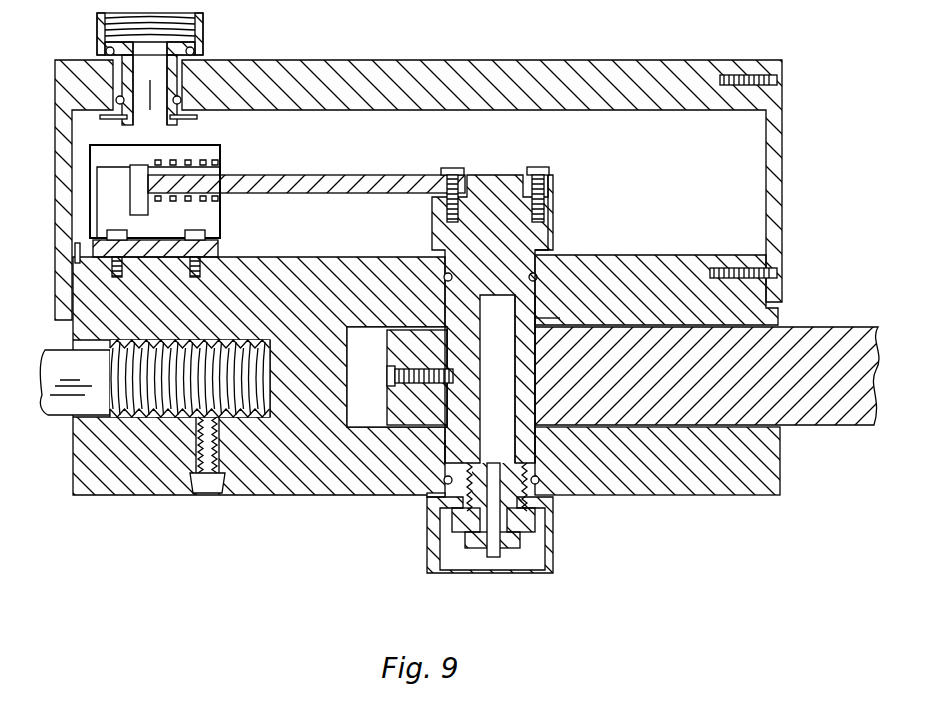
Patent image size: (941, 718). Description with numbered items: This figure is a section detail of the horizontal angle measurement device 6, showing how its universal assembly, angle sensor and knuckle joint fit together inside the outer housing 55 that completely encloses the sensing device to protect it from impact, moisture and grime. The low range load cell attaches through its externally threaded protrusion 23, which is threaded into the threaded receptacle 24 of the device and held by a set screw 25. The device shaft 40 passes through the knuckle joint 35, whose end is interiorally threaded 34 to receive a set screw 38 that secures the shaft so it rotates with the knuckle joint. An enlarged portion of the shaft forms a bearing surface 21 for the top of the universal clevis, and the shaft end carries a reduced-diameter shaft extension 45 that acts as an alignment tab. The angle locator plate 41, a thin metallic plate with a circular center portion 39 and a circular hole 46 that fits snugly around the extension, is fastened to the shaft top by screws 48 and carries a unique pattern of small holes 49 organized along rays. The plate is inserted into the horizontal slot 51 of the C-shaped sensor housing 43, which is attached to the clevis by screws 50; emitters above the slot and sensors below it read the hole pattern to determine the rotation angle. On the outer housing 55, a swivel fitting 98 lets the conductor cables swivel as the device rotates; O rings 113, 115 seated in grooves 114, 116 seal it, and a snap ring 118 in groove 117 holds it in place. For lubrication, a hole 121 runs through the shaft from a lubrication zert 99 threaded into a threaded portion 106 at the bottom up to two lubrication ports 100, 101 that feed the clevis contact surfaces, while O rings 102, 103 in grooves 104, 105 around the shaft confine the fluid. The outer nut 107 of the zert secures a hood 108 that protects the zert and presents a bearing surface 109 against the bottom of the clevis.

The horizontal angle measurement device 6 is at (130, 495).
The bearing surface 21 is at (540, 277).
The externally threaded protrusion 23 is at (60, 362).
The threaded receptacle 24 is at (212, 340).
The set screw 25 is at (225, 490).
The interior threading 34 is at (380, 360).
The knuckle joint 35 is at (556, 397).
The set screw 38 is at (420, 350).
The circular center portion 39 is at (552, 172).
The shaft 40 is at (554, 238).
The angle locator plate 41 is at (318, 176).
The housing 43 is at (205, 152).
The shaft extension 45 is at (150, 170).
The circular hole 46 is at (220, 242).
The screws 48 is at (453, 168).
The small holes 49 is at (218, 168).
The screws 50 is at (110, 234).
The horizontal slot 51 is at (216, 200).
The outer housing 55 is at (445, 60).
The swivel fitting 98 is at (203, 28).
The lubrication zert 99 is at (502, 540).
The lubrication port 100 is at (536, 450).
The lubrication port 101 is at (542, 321).
The O ring 102 is at (540, 480).
The O ring 103 is at (556, 292).
The groove 104 is at (444, 480).
The groove 105 is at (444, 277).
The threaded portion 106 is at (444, 456).
The outer nut 107 is at (550, 527).
The hood 108 is at (427, 550).
The bearing surface 109 is at (430, 496).
The O ring 113 is at (196, 52).
The groove 114 is at (105, 49).
The O ring 115 is at (182, 99).
The groove 116 is at (116, 99).
The groove 117 is at (198, 117).
The snap ring 118 is at (100, 117).
The hole 121 is at (518, 358).